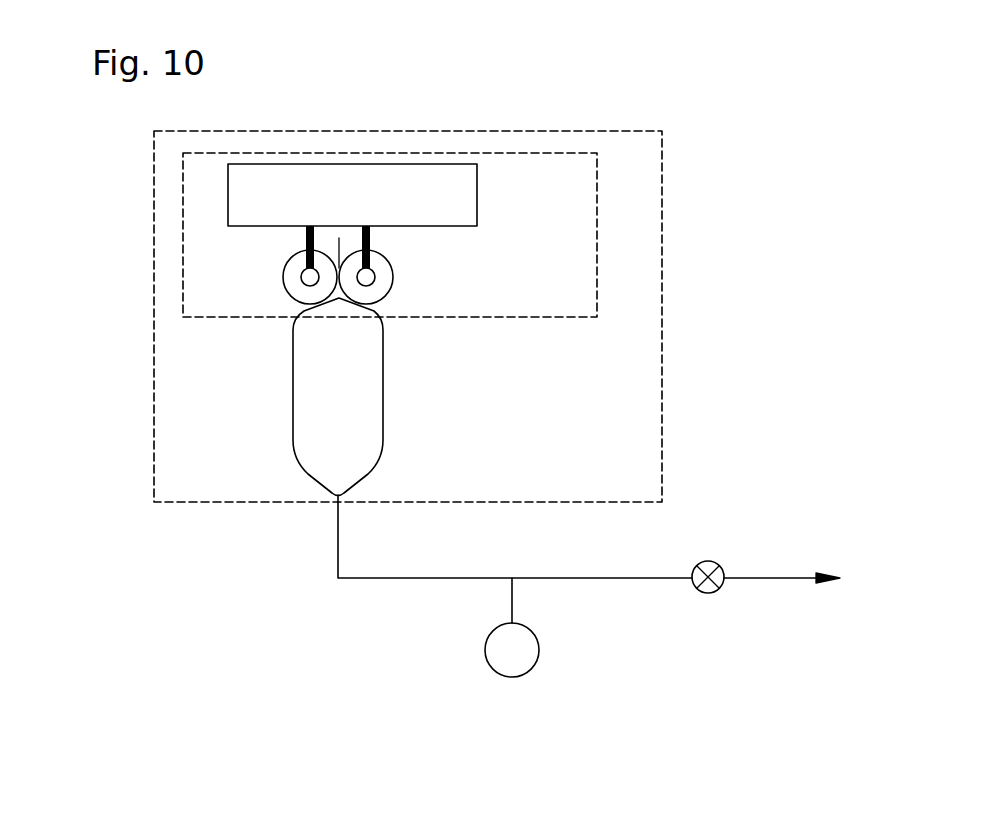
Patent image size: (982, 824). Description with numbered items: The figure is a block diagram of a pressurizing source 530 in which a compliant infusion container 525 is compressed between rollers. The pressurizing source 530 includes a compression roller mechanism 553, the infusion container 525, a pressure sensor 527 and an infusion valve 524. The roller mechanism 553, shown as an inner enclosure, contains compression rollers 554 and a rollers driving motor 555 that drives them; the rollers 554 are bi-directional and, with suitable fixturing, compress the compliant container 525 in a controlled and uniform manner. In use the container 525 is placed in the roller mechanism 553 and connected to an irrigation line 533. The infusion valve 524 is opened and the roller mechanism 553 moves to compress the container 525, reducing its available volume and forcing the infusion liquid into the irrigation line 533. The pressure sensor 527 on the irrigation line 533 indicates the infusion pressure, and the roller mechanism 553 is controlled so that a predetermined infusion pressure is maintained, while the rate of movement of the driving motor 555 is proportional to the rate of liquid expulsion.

The pressurizing source 530 is at (597, 131).
The compression roller mechanism 553 is at (488, 317).
The rollers driving motor 555 is at (477, 192).
The compression rollers 554 is at (392, 263).
The infusion container 525 is at (293, 390).
The irrigation line 533 is at (335, 540).
The pressure sensor 527 is at (487, 663).
The infusion valve 524 is at (722, 567).